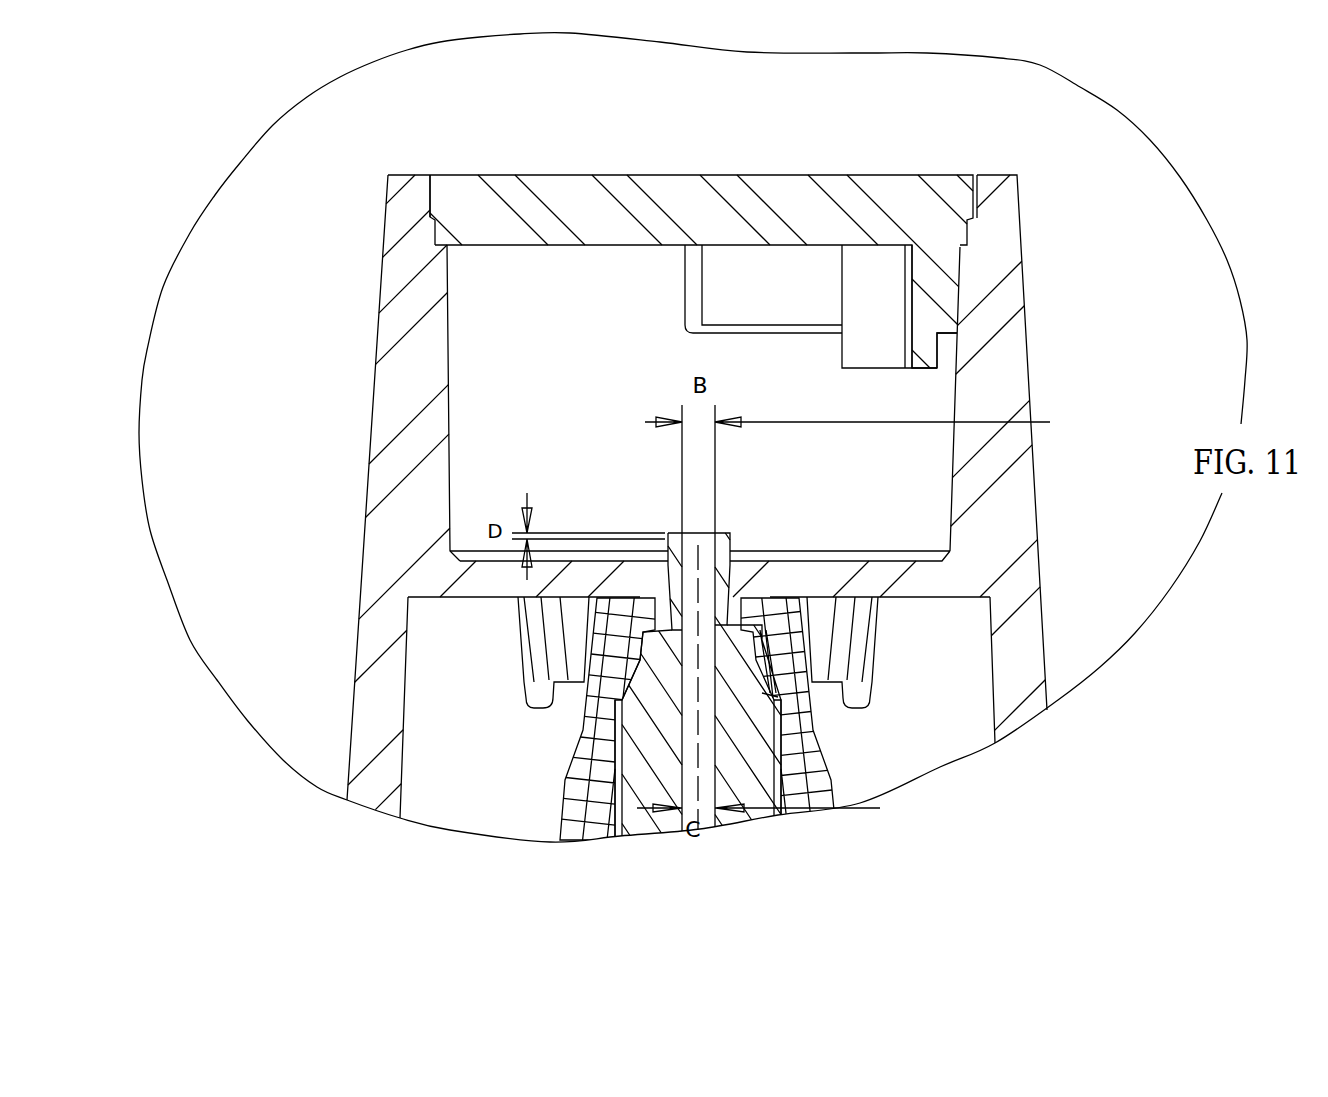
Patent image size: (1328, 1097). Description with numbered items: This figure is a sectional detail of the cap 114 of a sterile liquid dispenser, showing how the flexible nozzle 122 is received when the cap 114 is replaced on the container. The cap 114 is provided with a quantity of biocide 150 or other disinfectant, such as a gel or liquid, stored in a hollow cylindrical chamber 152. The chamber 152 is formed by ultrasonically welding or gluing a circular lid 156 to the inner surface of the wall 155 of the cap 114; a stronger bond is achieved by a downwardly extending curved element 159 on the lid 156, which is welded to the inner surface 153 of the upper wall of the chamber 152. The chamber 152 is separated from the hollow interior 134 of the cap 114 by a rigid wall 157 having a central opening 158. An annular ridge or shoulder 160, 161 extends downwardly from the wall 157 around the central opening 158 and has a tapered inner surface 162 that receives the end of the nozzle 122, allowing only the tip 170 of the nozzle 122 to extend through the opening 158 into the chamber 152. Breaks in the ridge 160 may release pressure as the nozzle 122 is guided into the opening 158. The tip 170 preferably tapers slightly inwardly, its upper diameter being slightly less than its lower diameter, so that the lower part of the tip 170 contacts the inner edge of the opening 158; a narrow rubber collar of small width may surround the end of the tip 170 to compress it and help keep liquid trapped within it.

The cap 114 is at (342, 586).
The flexible nozzle 122 is at (562, 818).
The hollow interior 134 is at (453, 695).
The biocide 150 is at (605, 386).
The hollow cylindrical chamber 152 is at (447, 367).
The inner surface 153 is at (955, 333).
The wall 155 is at (390, 193).
The circular lid 156 is at (663, 175).
The rigid wall 157 is at (877, 578).
The central opening 158 is at (732, 550).
The downwardly extending curved element 159 is at (945, 289).
The annular ridge 160 is at (870, 655).
The annular shoulder 161 is at (835, 706).
The tapered inner surface 162 is at (592, 660).
The tip 170 is at (670, 525).